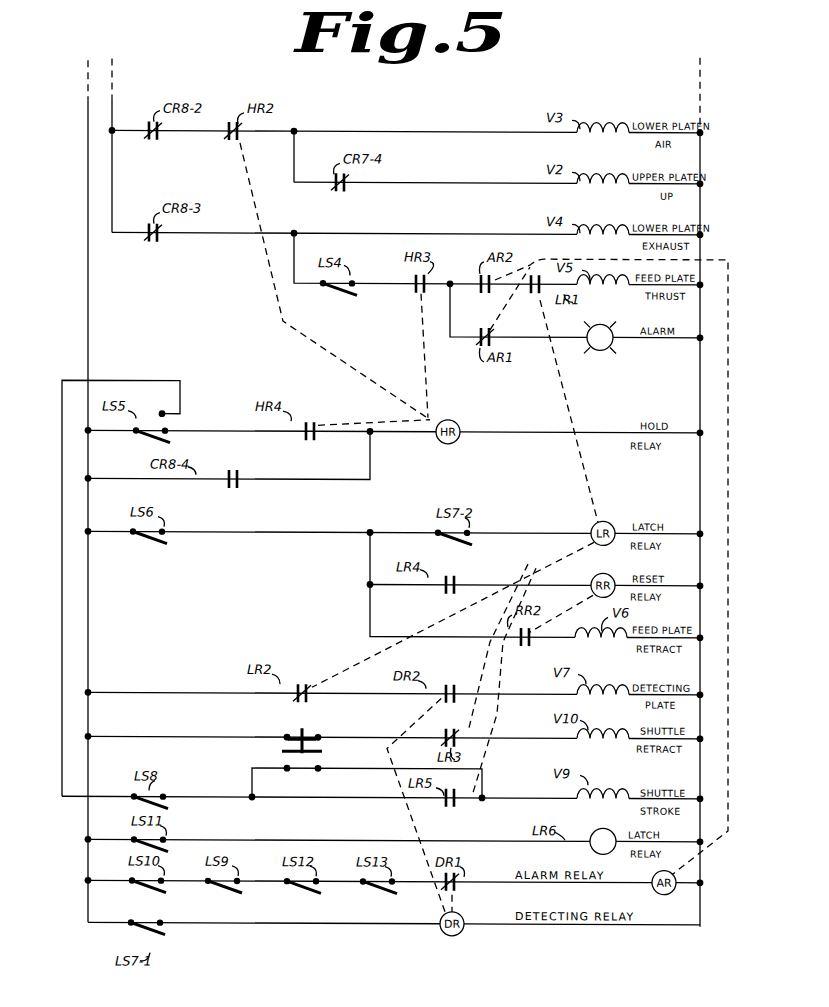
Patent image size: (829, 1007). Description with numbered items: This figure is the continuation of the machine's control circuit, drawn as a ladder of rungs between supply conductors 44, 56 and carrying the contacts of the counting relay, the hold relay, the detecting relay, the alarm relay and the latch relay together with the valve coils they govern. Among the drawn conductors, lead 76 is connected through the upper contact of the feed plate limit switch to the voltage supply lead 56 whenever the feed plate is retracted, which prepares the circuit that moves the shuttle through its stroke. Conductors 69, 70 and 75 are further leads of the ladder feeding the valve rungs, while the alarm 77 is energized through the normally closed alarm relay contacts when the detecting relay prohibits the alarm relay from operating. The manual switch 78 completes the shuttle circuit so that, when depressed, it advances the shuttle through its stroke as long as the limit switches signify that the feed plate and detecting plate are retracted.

The right supply conductor 44 is at (700, 203).
The voltage supply lead 56 is at (88, 300).
The conductor 69 is at (113, 111).
The conductor to upper platen up valve 70 is at (444, 181).
The conductor to lower platen air valve 75 is at (441, 130).
The lead 76 is at (62, 560).
The alarm 77 is at (588, 329).
The manual switch 78 is at (305, 731).